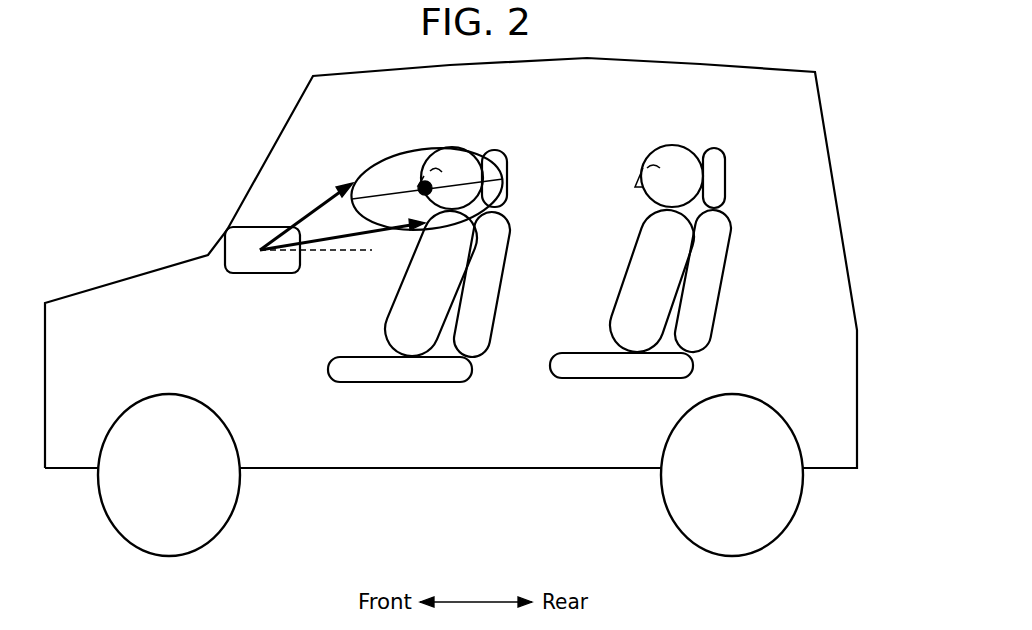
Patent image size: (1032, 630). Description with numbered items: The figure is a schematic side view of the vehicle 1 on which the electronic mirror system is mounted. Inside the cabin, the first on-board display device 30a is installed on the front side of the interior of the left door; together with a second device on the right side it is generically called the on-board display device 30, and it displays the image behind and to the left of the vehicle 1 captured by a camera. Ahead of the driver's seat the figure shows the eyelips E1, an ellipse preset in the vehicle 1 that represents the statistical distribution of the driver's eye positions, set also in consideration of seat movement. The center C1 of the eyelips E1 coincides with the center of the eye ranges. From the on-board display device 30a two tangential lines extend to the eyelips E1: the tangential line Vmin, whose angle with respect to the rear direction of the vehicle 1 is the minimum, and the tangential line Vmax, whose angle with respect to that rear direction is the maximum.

The vehicle 1 is at (856, 197).
The on-board display device 30 is at (256, 228).
The first on-board display device 30a is at (204, 228).
The eyelips E1 is at (371, 166).
The center of eyelips C1 is at (431, 182).
The tangential line Vmax of eyelips Vmax is at (313, 247).
The tangential line Vmin of eyelips Vmin is at (384, 232).